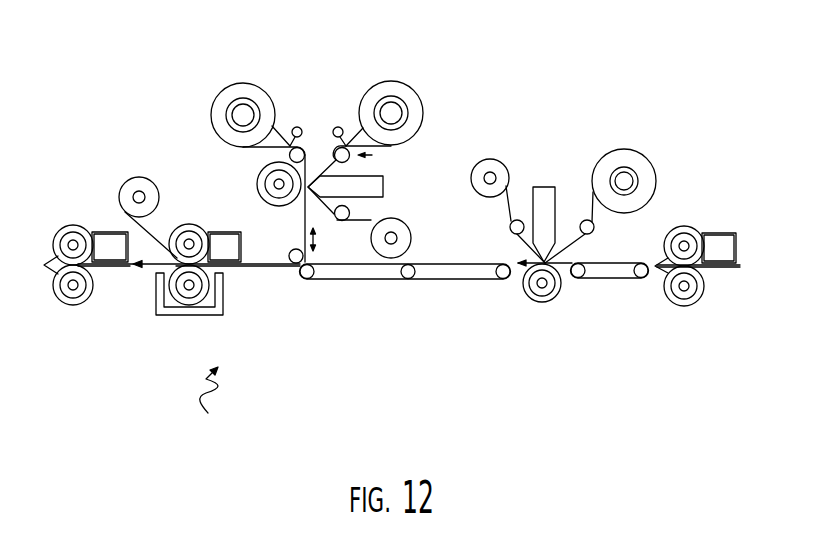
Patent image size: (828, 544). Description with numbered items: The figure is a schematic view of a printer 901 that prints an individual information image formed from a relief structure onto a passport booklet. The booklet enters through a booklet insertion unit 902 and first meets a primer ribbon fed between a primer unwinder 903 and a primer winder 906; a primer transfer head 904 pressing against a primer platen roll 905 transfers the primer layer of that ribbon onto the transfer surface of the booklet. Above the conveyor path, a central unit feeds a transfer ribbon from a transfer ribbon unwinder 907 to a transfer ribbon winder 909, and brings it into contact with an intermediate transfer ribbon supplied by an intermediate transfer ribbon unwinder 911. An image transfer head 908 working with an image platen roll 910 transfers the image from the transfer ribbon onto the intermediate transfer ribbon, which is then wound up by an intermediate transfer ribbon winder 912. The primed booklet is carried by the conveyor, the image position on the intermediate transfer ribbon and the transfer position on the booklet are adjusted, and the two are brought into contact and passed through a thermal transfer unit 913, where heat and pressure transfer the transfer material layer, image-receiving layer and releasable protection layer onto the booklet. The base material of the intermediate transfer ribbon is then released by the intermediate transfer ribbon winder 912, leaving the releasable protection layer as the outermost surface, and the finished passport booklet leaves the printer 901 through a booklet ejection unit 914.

The printer 901 is at (204, 406).
The booklet insertion unit 902 is at (690, 226).
The primer unwinder 903 is at (627, 149).
The primer transfer head 904 is at (545, 186).
The primer platen roll 905 is at (545, 302).
The primer winder 906 is at (490, 158).
The transfer ribbon unwinder 907 is at (392, 84).
The image transfer head 908 is at (388, 186).
The transfer ribbon winder 909 is at (412, 240).
The image platen roll 910 is at (258, 182).
The intermediate transfer ribbon unwinder 911 is at (243, 83).
The intermediate transfer ribbon winder 912 is at (142, 178).
The thermal transfer unit 913 is at (153, 300).
The booklet ejection unit 914 is at (75, 227).